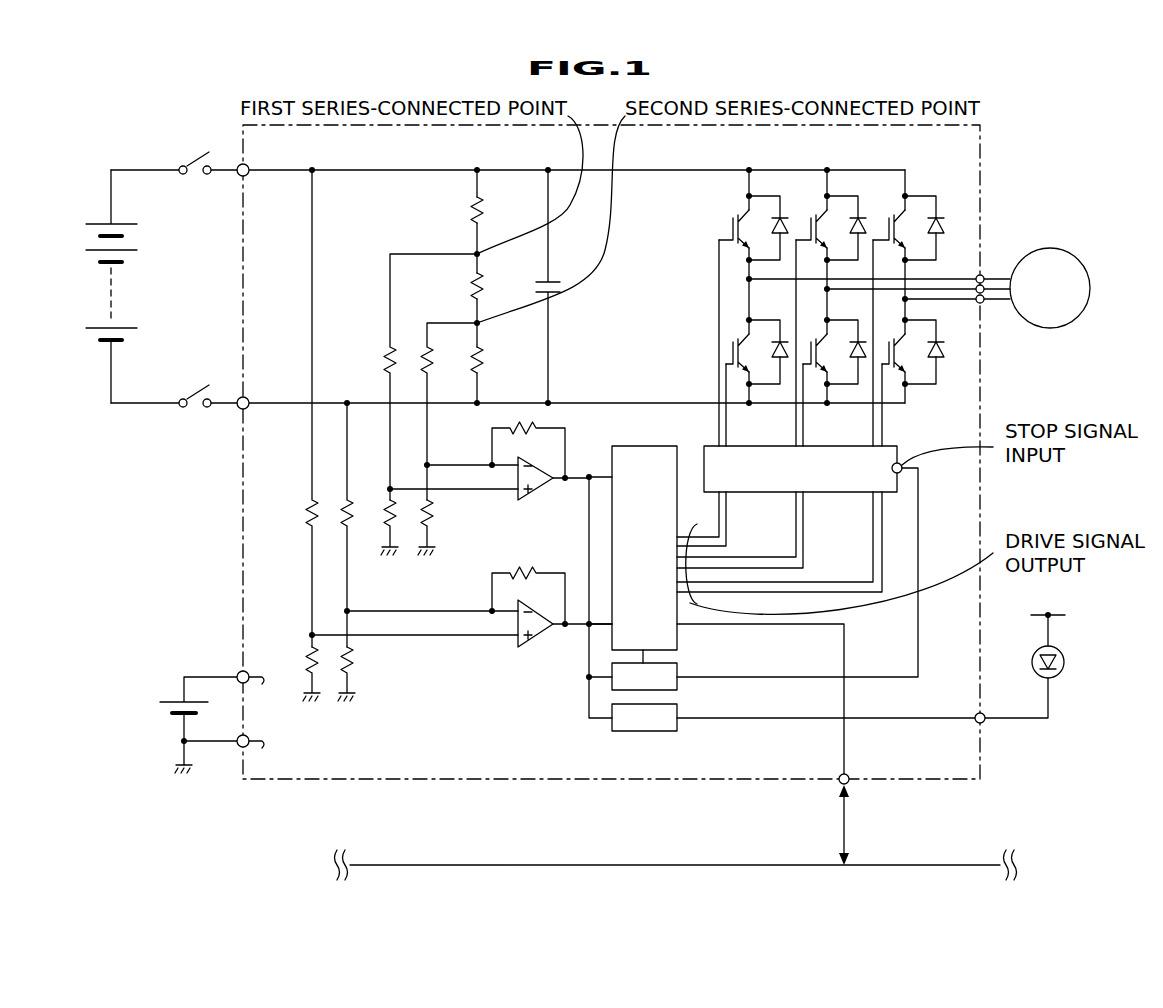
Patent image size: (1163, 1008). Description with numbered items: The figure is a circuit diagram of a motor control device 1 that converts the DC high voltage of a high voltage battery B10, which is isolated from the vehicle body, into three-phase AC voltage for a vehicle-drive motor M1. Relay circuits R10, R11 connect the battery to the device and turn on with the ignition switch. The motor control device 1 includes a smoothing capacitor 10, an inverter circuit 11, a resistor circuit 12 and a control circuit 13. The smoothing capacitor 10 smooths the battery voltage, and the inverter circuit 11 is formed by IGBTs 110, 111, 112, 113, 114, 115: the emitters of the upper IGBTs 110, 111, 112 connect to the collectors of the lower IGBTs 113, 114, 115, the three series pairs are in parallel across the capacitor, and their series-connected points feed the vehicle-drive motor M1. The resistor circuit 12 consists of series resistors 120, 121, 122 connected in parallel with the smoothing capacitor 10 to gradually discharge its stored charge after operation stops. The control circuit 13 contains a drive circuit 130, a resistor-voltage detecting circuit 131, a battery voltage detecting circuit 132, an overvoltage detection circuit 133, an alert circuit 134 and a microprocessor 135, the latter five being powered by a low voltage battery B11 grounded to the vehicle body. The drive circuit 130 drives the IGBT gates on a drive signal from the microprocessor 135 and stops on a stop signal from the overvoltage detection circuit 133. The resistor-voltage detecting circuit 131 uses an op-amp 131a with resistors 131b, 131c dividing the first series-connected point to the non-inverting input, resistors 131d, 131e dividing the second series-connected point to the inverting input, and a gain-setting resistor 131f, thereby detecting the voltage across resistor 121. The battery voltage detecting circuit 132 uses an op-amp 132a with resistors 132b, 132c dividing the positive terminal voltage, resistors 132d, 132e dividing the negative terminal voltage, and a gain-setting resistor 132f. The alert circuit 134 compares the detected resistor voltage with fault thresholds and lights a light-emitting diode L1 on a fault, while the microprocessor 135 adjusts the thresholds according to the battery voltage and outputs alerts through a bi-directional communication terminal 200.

The motor control device 1 is at (1021, 101).
The smoothing capacitor 10 is at (557, 278).
The inverter circuit 11 is at (856, 292).
The resistor circuit 12 is at (474, 269).
The control circuit 13 is at (548, 472).
The IGBT 110 is at (733, 213).
The IGBT 111 is at (810, 213).
The IGBT 112 is at (888, 213).
The IGBT 113 is at (753, 317).
The IGBT 114 is at (830, 323).
The IGBT 115 is at (912, 318).
The resistor 120 is at (510, 203).
The resistor 121 is at (510, 276).
The resistor 122 is at (510, 351).
The drive circuit 130 is at (900, 460).
The resistor-voltage detecting circuit 131 is at (458, 431).
The operational amplifier 131a is at (540, 487).
The resistor 131b is at (385, 348).
The resistor 131c is at (372, 527).
The resistor 131d is at (424, 345).
The resistor 131e is at (440, 520).
The resistor 131f is at (505, 417).
The battery voltage detecting circuit 132 is at (432, 436).
The operational amplifier 132a is at (537, 637).
The resistor 132b is at (300, 500).
The resistor 132c is at (300, 645).
The resistor 132d is at (350, 527).
The resistor 132e is at (355, 657).
The resistor 132f is at (525, 570).
The overvoltage detection circuit 133 is at (672, 668).
The alert circuit 134 is at (672, 710).
The microprocessor 135 is at (645, 452).
The bi-directional communication terminal 200 is at (837, 776).
The high voltage battery B10 is at (97, 217).
The low voltage battery B11 is at (170, 692).
The relay circuit R10 is at (190, 152).
The relay circuit R11 is at (188, 382).
The vehicle-drive motor M1 is at (1050, 253).
The light-emitting diode L1 is at (1067, 653).